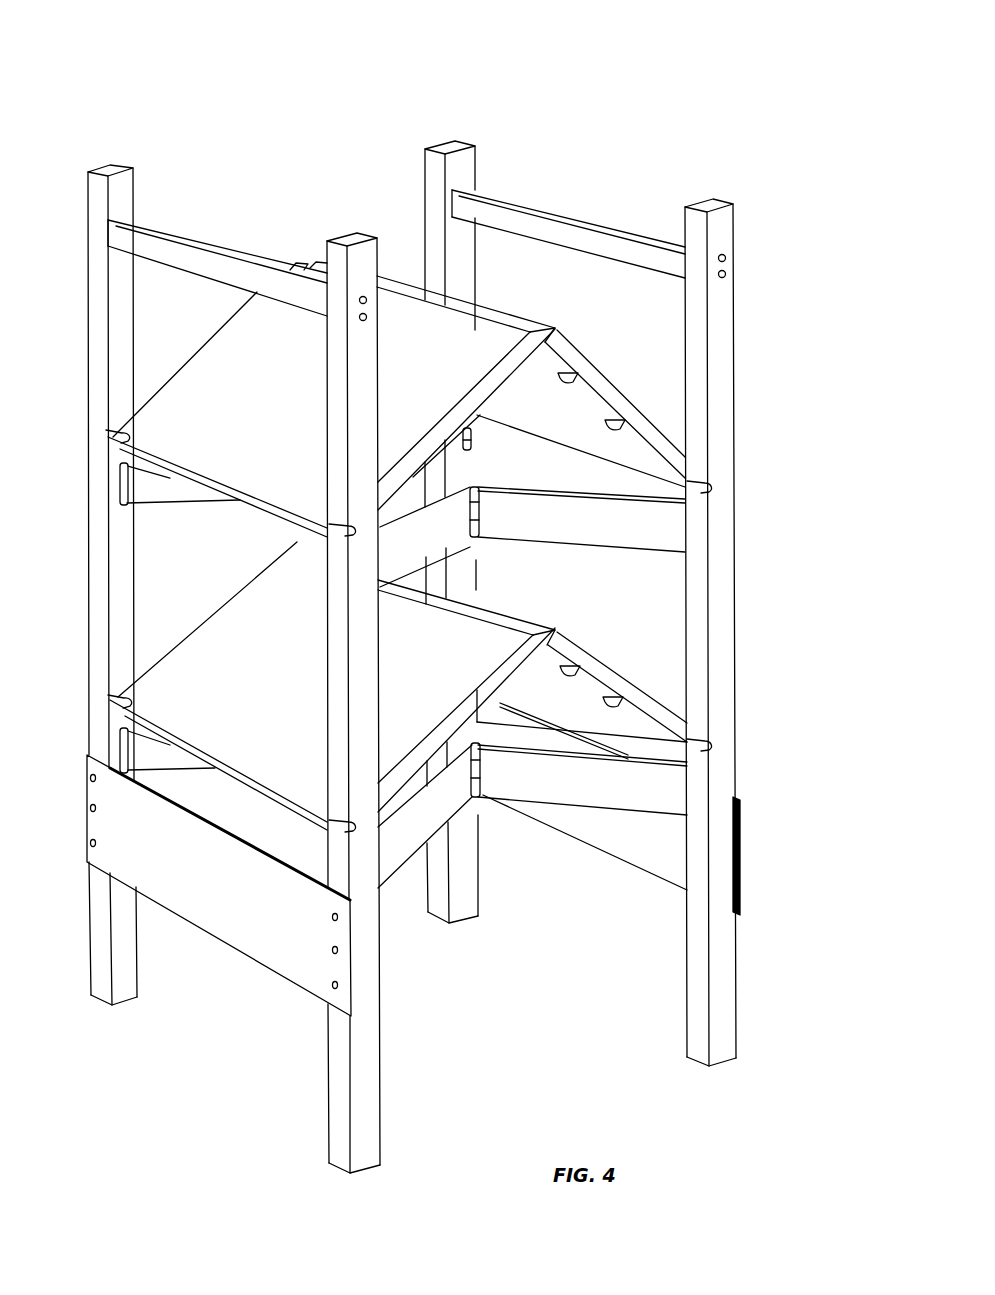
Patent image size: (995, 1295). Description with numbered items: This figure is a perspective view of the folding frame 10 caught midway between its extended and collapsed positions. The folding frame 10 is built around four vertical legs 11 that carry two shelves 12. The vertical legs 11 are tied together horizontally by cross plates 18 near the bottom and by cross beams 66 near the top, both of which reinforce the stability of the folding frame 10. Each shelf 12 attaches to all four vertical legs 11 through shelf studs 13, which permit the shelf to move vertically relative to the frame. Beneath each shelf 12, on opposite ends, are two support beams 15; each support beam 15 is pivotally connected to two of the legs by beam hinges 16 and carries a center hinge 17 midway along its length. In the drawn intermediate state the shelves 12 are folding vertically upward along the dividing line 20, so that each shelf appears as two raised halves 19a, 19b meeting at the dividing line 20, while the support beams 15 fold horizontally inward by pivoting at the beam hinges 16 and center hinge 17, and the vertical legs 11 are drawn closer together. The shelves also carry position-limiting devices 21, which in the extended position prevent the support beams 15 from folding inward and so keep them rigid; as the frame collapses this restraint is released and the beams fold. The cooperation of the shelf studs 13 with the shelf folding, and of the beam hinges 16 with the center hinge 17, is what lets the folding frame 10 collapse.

The folding frame 10 is at (289, 88).
The vertical legs 11 is at (113, 172).
The shelves 12 is at (185, 395).
The shelf studs 13 is at (105, 437).
The support beams 15 is at (175, 492).
The beam hinges 16 is at (120, 483).
The center hinge 17 is at (480, 525).
The cross plates 18 is at (255, 938).
The shelf half 19a is at (205, 370).
The shelf half 19b is at (600, 350).
The dividing line 20 is at (497, 318).
The position-limiting devices 21 is at (588, 716).
The cross beams 66 is at (215, 245).